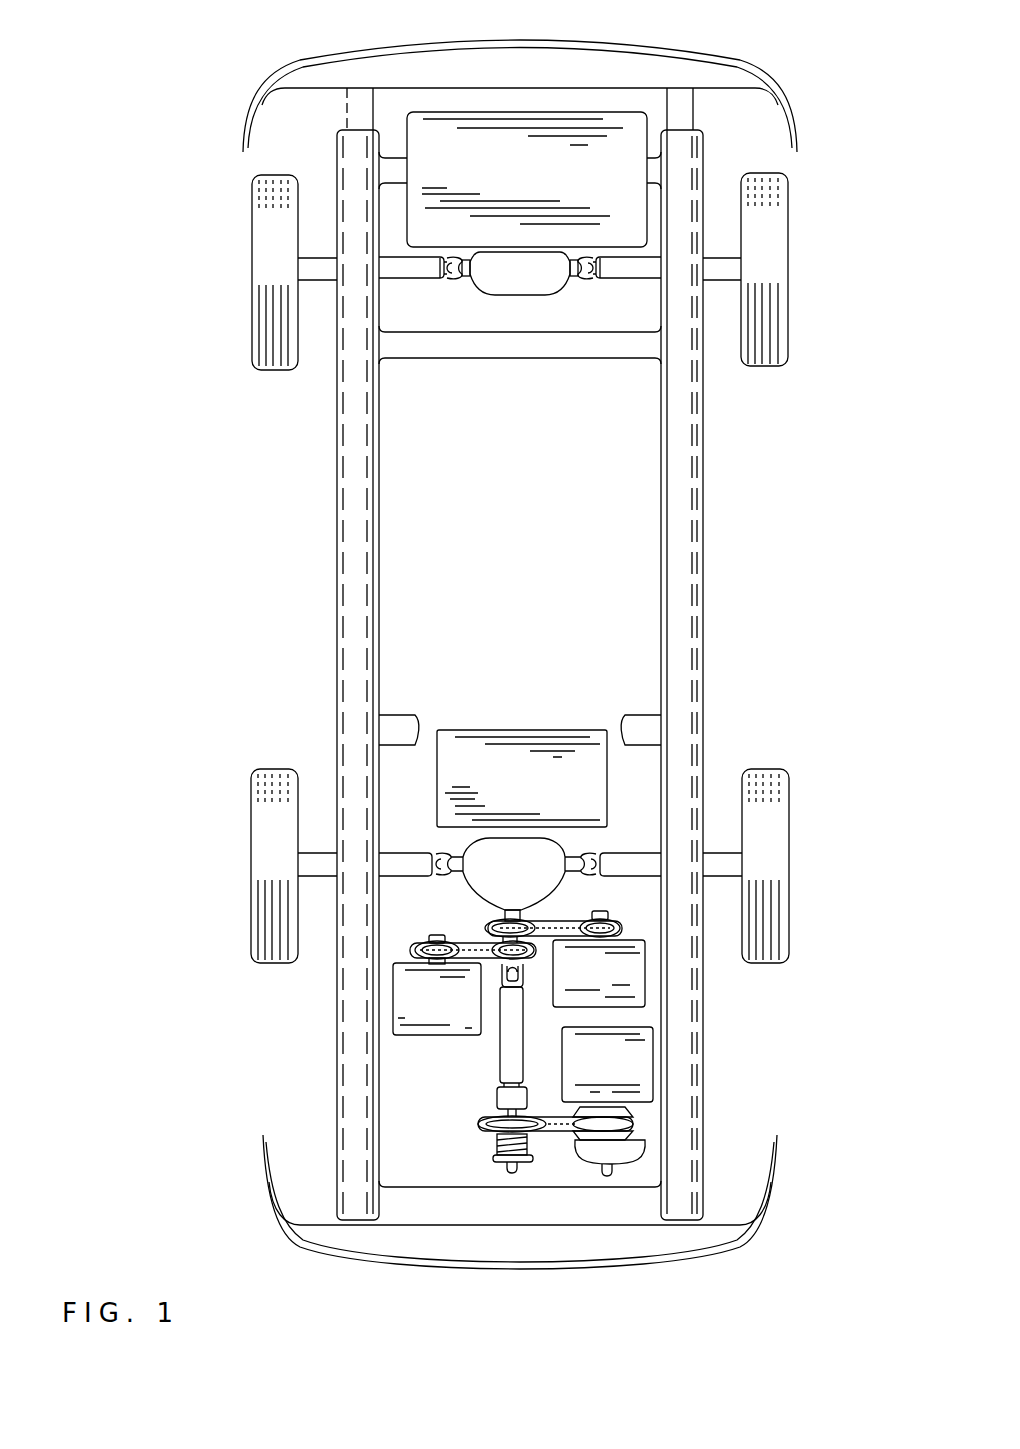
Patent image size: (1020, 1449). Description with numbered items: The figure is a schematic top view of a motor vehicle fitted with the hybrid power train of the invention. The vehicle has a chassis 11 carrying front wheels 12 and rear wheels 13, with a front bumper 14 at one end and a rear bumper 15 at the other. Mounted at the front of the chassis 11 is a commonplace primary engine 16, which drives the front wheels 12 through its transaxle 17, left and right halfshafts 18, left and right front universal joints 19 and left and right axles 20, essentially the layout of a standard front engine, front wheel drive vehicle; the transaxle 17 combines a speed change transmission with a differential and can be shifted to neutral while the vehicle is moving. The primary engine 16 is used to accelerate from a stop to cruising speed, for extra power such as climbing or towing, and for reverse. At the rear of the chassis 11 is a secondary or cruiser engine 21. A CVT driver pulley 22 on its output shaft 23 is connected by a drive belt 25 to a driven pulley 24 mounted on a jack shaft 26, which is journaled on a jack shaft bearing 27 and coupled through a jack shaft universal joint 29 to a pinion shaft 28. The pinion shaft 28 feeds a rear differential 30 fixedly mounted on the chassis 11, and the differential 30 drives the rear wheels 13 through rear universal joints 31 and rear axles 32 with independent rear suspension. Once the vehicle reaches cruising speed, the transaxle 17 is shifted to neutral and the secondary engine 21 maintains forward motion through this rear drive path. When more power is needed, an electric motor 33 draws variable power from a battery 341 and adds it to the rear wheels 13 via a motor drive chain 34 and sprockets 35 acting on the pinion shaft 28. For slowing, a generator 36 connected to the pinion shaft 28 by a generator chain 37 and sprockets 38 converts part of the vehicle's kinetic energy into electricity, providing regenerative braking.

The motor vehicle chassis 11 is at (704, 578).
The front wheels 12 is at (251, 251).
The rear wheels 13 is at (250, 843).
The front bumper 14 is at (573, 40).
The rear bumper 15 is at (523, 1270).
The primary engine 16 is at (547, 188).
The transaxle 17 is at (527, 280).
The halfshafts 18 is at (467, 281).
The front universal joints 19 is at (452, 283).
The axles 20 is at (410, 282).
The secondary engine 21 is at (624, 1073).
The CVT driver pulley 22 is at (645, 1145).
The output shaft 23 is at (613, 1172).
The driven pulley 24 is at (478, 1130).
The drive belt 25 is at (553, 1131).
The jack shaft 26 is at (497, 1053).
The jack shaft bearing 27 is at (497, 1093).
The pinion shaft 28 is at (506, 917).
The jack shaft universal joint 29 is at (500, 977).
The rear differential 30 is at (529, 880).
The rear universal joints 31 is at (438, 851).
The rear axles 32 is at (321, 852).
The electric motor 33 is at (451, 1018).
The motor drive chain 34 is at (480, 943).
The sprockets 35 is at (412, 950).
The generator 36 is at (604, 985).
The generator chain 37 is at (563, 923).
The sprockets 38 is at (528, 926).
The battery 341 is at (547, 797).